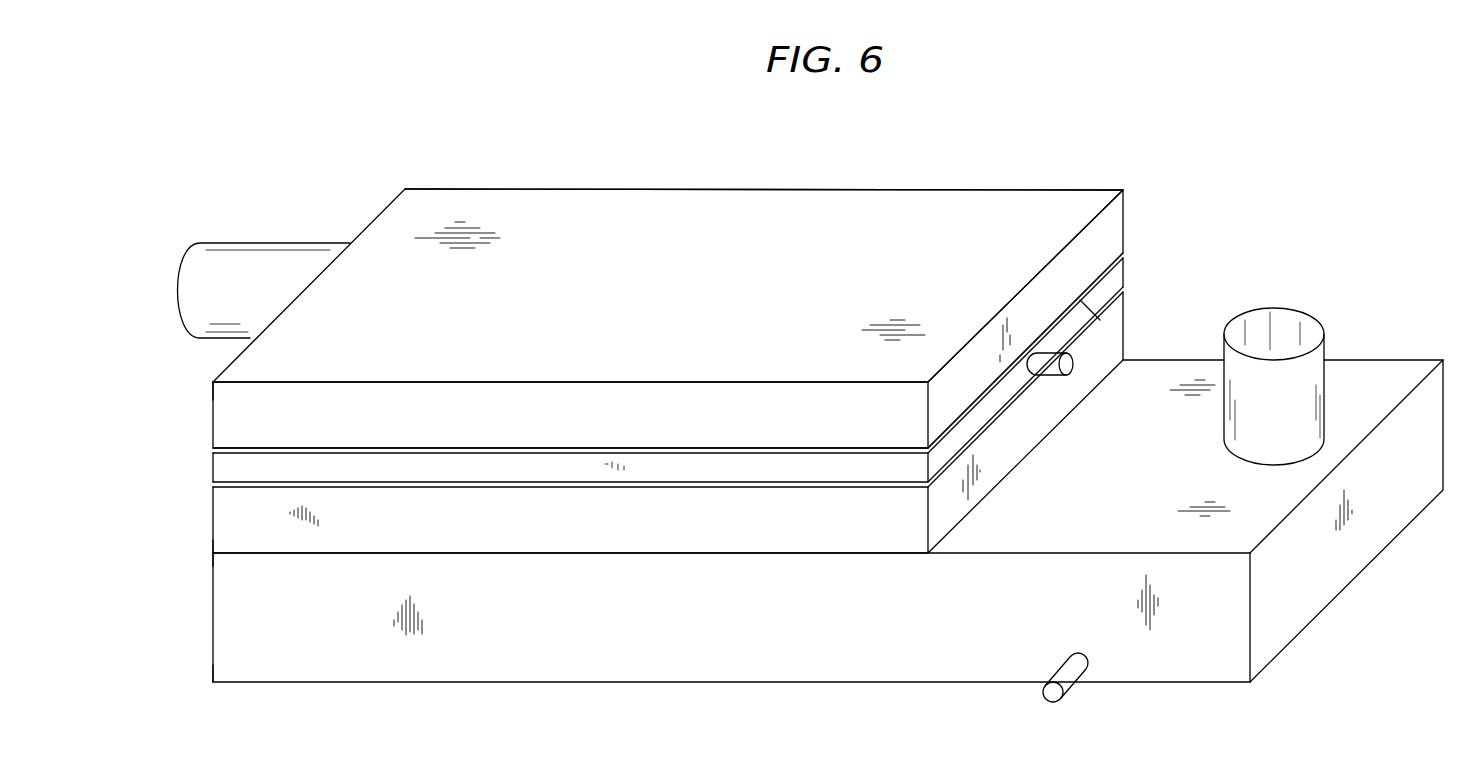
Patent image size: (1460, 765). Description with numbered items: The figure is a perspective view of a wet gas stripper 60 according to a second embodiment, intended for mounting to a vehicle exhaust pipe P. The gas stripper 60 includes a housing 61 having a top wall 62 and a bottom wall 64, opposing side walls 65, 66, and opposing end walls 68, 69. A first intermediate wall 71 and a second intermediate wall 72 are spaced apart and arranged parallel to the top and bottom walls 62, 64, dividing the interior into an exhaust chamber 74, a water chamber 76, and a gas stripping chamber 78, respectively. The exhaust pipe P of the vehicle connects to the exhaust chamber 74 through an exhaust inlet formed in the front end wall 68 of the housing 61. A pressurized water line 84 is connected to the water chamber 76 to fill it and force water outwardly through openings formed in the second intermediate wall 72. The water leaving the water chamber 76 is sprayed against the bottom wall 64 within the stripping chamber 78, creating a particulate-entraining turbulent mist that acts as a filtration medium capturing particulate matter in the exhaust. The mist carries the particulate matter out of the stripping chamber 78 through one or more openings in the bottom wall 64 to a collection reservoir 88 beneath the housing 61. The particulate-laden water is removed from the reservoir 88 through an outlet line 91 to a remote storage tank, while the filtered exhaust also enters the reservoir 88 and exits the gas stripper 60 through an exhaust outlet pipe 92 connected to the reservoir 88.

The wet gas stripper 60 is at (374, 136).
The housing 61 is at (1118, 222).
The top wall 62 is at (501, 190).
The bottom wall 64 is at (322, 553).
The side wall 65 is at (218, 522).
The side wall 66 is at (832, 190).
The front end wall 68 is at (213, 423).
The end wall 69 is at (1118, 270).
The first intermediate wall 71 is at (275, 448).
The second intermediate wall 72 is at (352, 482).
The exhaust chamber 74 is at (234, 404).
The water chamber 76 is at (1097, 313).
The gas stripping chamber 78 is at (241, 534).
The pressurized water line 84 is at (1071, 370).
The collection reservoir 88 is at (243, 659).
The outlet line 91 is at (1069, 689).
The exhaust outlet pipe 92 is at (1295, 322).
The exhaust pipe P is at (233, 250).